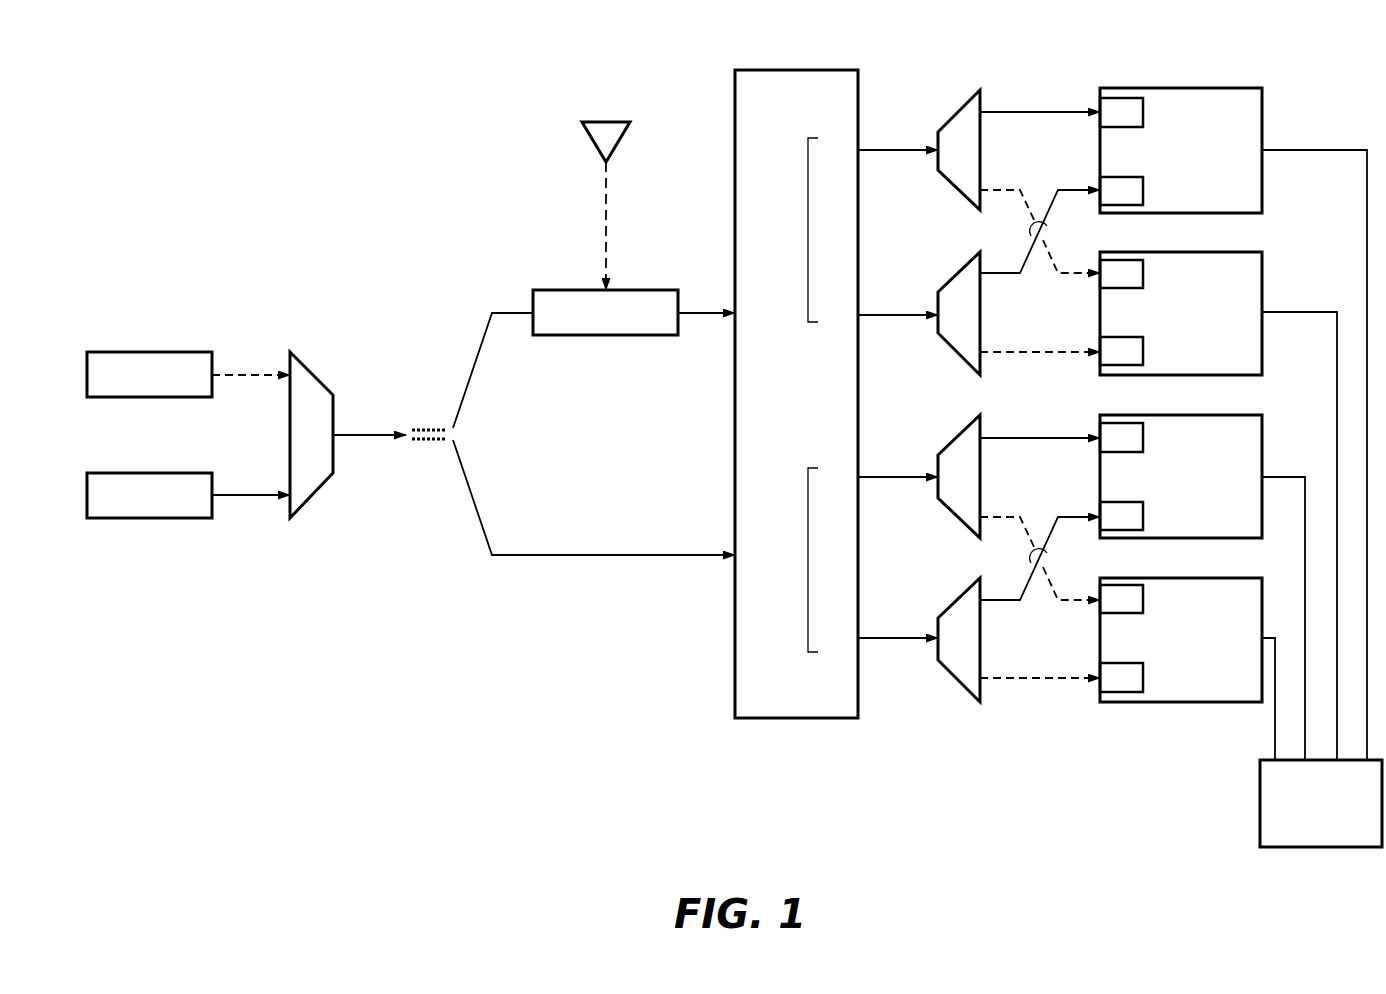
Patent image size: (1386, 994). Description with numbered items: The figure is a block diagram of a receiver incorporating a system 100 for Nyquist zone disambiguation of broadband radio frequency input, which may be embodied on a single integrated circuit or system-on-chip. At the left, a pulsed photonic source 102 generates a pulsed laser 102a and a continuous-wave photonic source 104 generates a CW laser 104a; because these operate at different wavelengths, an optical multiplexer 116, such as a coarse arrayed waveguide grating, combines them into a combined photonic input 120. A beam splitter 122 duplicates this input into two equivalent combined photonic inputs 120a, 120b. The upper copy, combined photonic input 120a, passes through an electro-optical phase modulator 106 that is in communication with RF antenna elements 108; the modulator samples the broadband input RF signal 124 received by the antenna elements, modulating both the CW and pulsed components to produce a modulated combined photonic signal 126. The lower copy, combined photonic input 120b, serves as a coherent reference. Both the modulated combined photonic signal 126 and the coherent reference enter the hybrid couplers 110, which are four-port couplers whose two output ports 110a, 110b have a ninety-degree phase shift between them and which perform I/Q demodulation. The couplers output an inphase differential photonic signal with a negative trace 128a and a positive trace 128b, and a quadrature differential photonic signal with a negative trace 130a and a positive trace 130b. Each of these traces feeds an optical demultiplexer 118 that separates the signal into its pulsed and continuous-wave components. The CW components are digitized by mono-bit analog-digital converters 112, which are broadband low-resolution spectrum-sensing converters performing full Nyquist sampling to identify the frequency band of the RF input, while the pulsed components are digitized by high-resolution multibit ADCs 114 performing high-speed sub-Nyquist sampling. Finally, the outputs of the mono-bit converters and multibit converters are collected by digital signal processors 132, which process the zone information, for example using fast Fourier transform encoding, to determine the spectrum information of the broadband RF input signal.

The system 100 is at (103, 108).
The pulsed photonic source 102 is at (130, 387).
The pulsed laser 102a is at (232, 368).
The continuous-wave photonic source 104 is at (130, 508).
The CW laser 104a is at (245, 498).
The electro-optical phase modulator 106 is at (586, 325).
The RF antenna elements 108 is at (590, 142).
The hybrid couplers 110 is at (781, 404).
The output port 110a is at (806, 233).
The output port 110b is at (806, 560).
The mono-bit analog-digital converters 112 is at (1162, 167).
The multibit ADCs 114 is at (1162, 324).
The optical multiplexer 116 is at (305, 388).
The optical demultiplexers 118 is at (963, 107).
The combined photonic input 120 is at (355, 442).
The combined photonic input 120a is at (476, 352).
The combined photonic input 120b is at (633, 553).
The beam splitter 122 is at (430, 425).
The broadband input RF signal 124 is at (603, 260).
The modulated combined photonic signal 126 is at (697, 310).
The negative trace 128a is at (883, 155).
The positive trace 128b is at (878, 320).
The negative trace 130a is at (890, 473).
The positive trace 130b is at (880, 635).
The digital signal processors 132 is at (1301, 814).